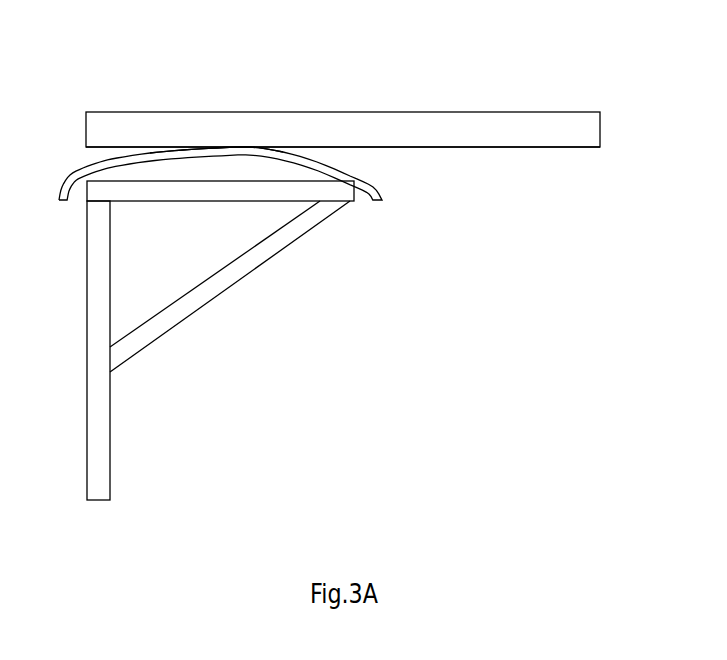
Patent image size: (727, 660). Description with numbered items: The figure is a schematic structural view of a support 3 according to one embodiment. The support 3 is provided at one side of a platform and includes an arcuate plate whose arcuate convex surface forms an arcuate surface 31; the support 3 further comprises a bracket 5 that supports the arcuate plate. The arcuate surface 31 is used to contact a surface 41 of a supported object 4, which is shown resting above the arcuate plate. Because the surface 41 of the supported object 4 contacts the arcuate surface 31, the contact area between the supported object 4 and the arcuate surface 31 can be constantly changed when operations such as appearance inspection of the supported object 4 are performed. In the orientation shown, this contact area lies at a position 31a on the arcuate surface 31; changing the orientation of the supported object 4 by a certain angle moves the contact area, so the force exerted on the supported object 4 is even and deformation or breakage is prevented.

The support 3 is at (368, 187).
The arcuate surface 31 is at (310, 153).
The position 31a is at (220, 148).
The supported object 4 is at (425, 127).
The surface of the supported object 41 is at (498, 148).
The bracket 5 is at (237, 272).